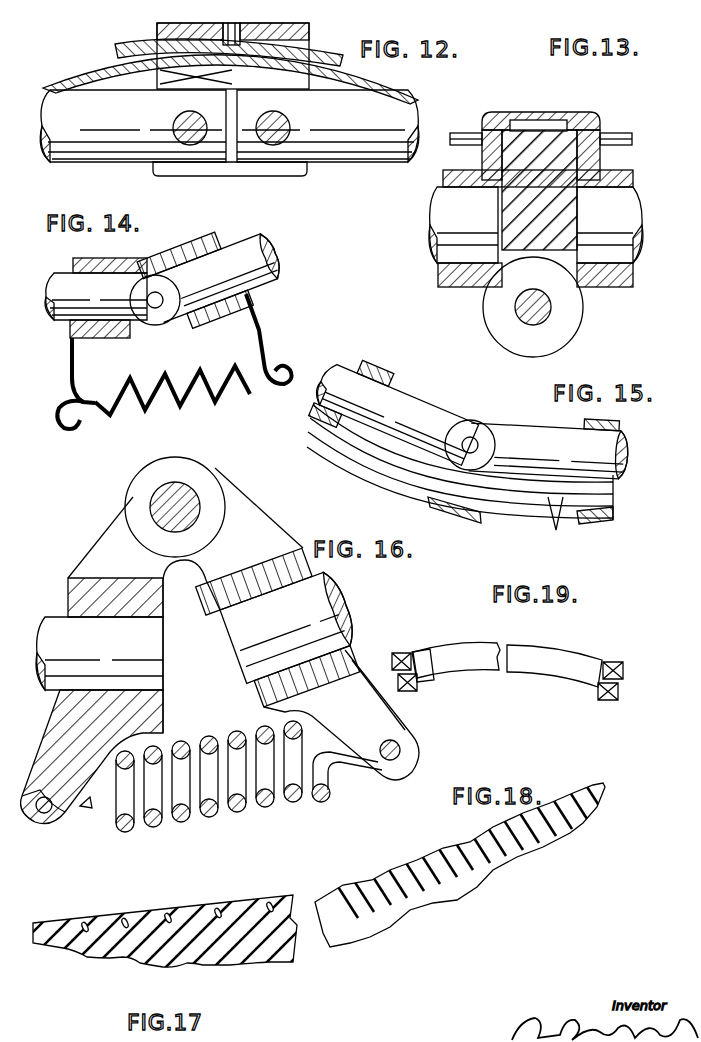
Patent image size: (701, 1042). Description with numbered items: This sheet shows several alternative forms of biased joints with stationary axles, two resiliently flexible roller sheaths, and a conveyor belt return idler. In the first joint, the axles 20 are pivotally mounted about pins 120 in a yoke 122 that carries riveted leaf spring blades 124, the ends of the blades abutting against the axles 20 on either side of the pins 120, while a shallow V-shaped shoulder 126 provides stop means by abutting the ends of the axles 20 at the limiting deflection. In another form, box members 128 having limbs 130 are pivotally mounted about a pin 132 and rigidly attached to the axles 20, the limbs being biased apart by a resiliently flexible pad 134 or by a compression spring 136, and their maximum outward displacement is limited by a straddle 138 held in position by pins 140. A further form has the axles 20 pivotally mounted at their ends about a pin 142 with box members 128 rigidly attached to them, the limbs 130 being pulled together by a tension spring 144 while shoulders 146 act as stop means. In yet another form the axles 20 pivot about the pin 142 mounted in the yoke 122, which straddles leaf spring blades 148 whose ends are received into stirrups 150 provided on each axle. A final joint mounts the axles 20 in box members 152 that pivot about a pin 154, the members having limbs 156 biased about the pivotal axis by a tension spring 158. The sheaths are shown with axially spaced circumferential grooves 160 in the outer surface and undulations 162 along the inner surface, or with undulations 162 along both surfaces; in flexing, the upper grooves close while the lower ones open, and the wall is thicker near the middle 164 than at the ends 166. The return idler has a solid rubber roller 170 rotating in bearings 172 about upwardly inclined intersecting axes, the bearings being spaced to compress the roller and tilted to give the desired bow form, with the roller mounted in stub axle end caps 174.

In FIG. 12, the axles 20 is at (82, 115).
In FIG. 13, the axles 20 is at (536, 272).
In FIG. 14, the axles 20 is at (75, 301).
In FIG. 15, the axles 20 is at (361, 400).
In FIG. 16, the axles 20 is at (78, 646).
In FIG. 12, the pins 120 is at (187, 125).
In FIG. 12, the yoke 122 is at (275, 176).
In FIG. 15, the yoke 122 is at (470, 522).
In FIG. 12, the leaf spring blades 124 is at (316, 45).
In FIG. 12, the shallow V-shaped shoulder 126 is at (210, 77).
In FIG. 13, the box members 128 is at (462, 280).
In FIG. 14, the box members 128 is at (118, 338).
In FIG. 13, the limbs 130 is at (492, 118).
In FIG. 14, the limbs 130 is at (250, 308).
In FIG. 13, the pin 132 is at (520, 313).
In FIG. 13, the resiliently flexible pad 134 is at (620, 178).
In FIG. 13, the compression spring 136 is at (572, 222).
In FIG. 13, the straddle 138 is at (558, 112).
In FIG. 13, the pins 140 is at (455, 145).
In FIG. 14, the pin 142 is at (160, 299).
In FIG. 15, the pin 142 is at (472, 443).
In FIG. 14, the tension spring 144 is at (172, 404).
In FIG. 14, the shoulders 146 is at (160, 258).
In FIG. 15, the leaf spring blades 148 is at (557, 530).
In FIG. 15, the stirrups 150 is at (333, 466).
In FIG. 16, the box members 152 is at (262, 702).
In FIG. 16, the pin 154 is at (190, 500).
In FIG. 16, the limbs 156 is at (55, 803).
In FIG. 16, the tension spring 158 is at (240, 812).
In FIG. 17, the circumferential grooves 160 is at (168, 912).
In FIG. 18, the undulations 162 is at (470, 842).
In FIG. 17, the undulations 162 is at (210, 975).
In FIG. 18, the middle 164 is at (322, 900).
In FIG. 17, the middle 164 is at (277, 897).
In FIG. 18, the ends 166 is at (592, 783).
In FIG. 17, the ends 166 is at (52, 922).
In FIG. 19, the solid rubber roller 170 is at (520, 660).
In FIG. 19, the bearings 172 is at (402, 653).
In FIG. 19, the stub axle end caps 174 is at (426, 677).